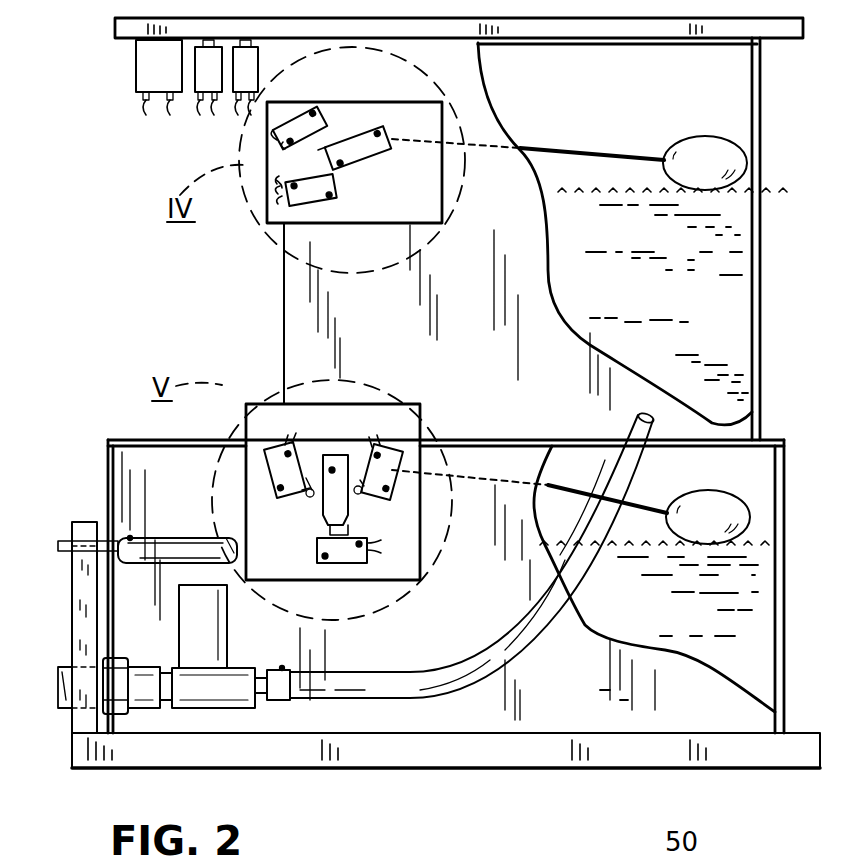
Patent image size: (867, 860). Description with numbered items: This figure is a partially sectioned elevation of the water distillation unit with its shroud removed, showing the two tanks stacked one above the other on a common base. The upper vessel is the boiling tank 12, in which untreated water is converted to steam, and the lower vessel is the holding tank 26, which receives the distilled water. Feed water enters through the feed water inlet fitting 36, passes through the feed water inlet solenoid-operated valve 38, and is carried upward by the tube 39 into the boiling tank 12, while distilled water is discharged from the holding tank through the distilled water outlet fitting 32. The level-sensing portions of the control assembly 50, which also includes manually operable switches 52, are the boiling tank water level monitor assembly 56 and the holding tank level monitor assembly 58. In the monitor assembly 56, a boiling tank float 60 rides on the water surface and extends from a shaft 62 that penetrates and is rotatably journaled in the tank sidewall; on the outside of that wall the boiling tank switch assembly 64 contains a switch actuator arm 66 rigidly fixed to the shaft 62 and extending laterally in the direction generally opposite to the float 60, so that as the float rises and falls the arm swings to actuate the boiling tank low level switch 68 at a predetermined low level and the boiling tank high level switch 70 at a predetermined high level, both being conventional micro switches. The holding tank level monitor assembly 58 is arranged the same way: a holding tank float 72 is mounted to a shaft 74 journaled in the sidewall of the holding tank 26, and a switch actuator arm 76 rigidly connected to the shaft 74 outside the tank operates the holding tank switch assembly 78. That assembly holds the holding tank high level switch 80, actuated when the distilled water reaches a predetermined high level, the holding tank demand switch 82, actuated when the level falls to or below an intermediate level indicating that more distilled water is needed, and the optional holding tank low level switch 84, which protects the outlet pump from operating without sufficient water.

The boiling tank 12 is at (762, 150).
The holding tank 26 is at (786, 503).
The distilled water outlet fitting 32 is at (216, 536).
The feed water inlet fitting 36 is at (60, 683).
The feed water inlet solenoid-operated valve 38 is at (232, 672).
The tube 39 is at (490, 646).
The control assembly 50 is at (161, 145).
The manually operable switches 52 is at (492, 859).
The boiling tank water level monitor assembly 56 is at (474, 82).
The holding tank level monitor assembly 58 is at (373, 652).
The boiling tank float 60 is at (718, 146).
The shaft 62 is at (388, 132).
The boiling tank switch assembly 64 is at (273, 196).
The switch actuator arm 66 is at (341, 135).
The boiling tank low level switch 68 is at (294, 114).
The boiling tank high level switch 70 is at (335, 193).
The holding tank float 72 is at (742, 508).
The shaft 74 is at (347, 452).
The switch actuator arm 76 is at (324, 482).
The holding tank switch assembly 78 is at (262, 500).
The holding tank high level switch 80 is at (392, 458).
The holding tank demand switch 82 is at (351, 563).
The holding tank low level switch 84 is at (276, 465).